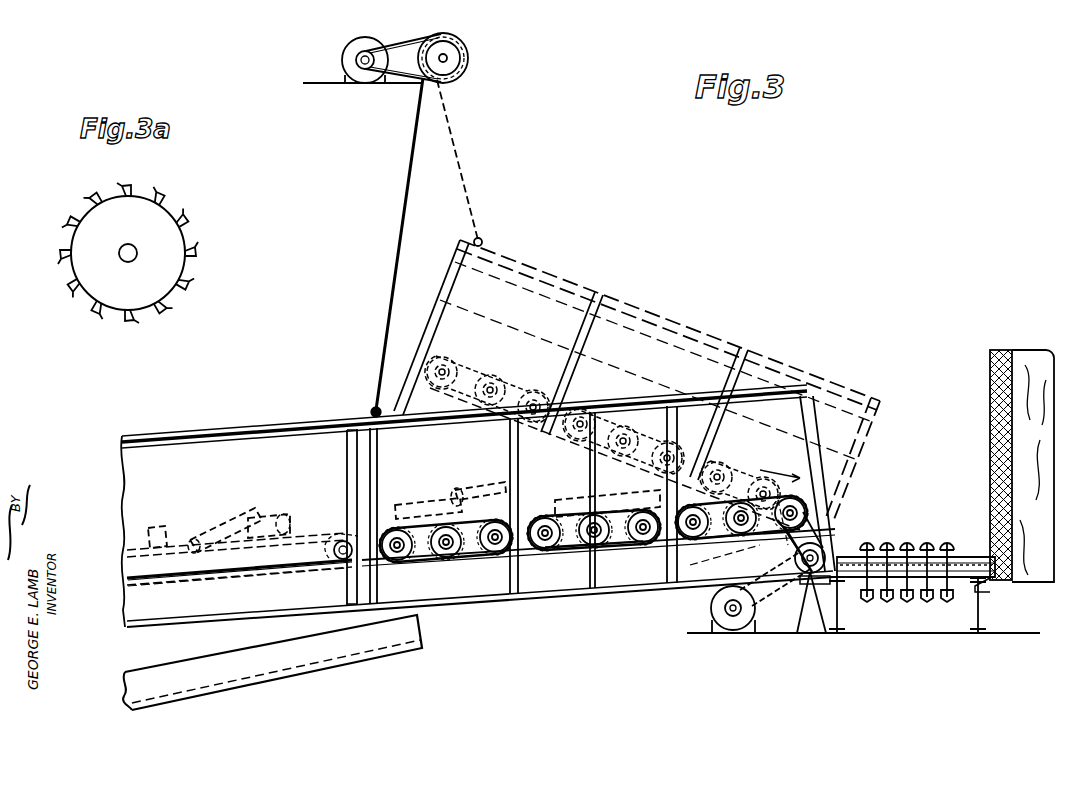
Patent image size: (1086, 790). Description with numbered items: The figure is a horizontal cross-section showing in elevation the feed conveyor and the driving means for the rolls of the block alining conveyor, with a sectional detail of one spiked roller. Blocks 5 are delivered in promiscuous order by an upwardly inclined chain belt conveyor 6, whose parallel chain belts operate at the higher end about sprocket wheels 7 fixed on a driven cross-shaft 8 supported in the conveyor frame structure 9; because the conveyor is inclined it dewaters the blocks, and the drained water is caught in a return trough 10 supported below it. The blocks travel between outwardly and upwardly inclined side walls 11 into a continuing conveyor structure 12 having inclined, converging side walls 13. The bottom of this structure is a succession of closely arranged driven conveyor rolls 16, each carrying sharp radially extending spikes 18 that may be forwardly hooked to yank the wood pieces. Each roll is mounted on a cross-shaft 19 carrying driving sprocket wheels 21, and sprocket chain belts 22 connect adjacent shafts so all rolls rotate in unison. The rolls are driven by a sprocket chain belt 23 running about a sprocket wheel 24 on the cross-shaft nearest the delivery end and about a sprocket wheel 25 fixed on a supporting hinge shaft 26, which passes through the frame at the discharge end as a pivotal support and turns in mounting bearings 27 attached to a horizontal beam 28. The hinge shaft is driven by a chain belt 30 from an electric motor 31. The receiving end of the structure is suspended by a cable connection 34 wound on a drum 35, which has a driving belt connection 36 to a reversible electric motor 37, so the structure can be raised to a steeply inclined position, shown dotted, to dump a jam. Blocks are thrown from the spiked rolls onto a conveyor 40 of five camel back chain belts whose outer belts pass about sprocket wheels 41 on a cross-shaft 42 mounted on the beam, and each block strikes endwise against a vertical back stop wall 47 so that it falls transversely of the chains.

In FIG. 3, the blocks 5 is at (170, 520).
In FIG. 3, the chain belt conveyor 6 is at (172, 582).
In FIG. 3, the sprocket wheels 7 is at (328, 566).
In FIG. 3, the driven cross-shaft 8 is at (341, 556).
In FIG. 3, the conveyor frame structure 9 is at (352, 470).
In FIG. 3, the return trough 10 is at (215, 680).
In FIG. 3, the side walls 11 is at (218, 437).
In FIG. 3, the conveyor structure 12 is at (772, 380).
In FIG. 3, the side walls 13 is at (646, 445).
In FIG. 3A, the conveyor rolls 16 is at (160, 237).
In FIG. 3A, the spikes 18 is at (165, 198).
In FIG. 3, the cross-shaft 19 is at (450, 550).
In FIG. 3A, the cross-shaft 19 is at (137, 255).
In FIG. 3, the driving sprocket wheels 21 is at (575, 548).
In FIG. 3, the sprocket chain belts 22 is at (418, 525).
In FIG. 3, the sprocket chain belt 23 is at (800, 548).
In FIG. 3, the sprocket wheel 24 is at (768, 538).
In FIG. 3, the sprocket wheel 25 is at (790, 625).
In FIG. 3, the hinge shaft 26 is at (805, 628).
In FIG. 3, the mounting bearings 27 is at (820, 618).
In FIG. 3, the horizontal beam 28 is at (840, 637).
In FIG. 3, the chain belt 30 is at (740, 582).
In FIG. 3, the electric motor 31 is at (726, 608).
In FIG. 3, the cable connection 34 is at (410, 125).
In FIG. 3, the drum 35 is at (446, 56).
In FIG. 3, the driving belt connection 36 is at (392, 44).
In FIG. 3, the reversible electric motor 37 is at (348, 62).
In FIG. 3, the conveyor 40 is at (915, 545).
In FIG. 3, the sprocket wheels 41 is at (905, 605).
In FIG. 3, the cross-shaft 42 is at (985, 565).
In FIG. 3, the back stop wall 47 is at (990, 403).